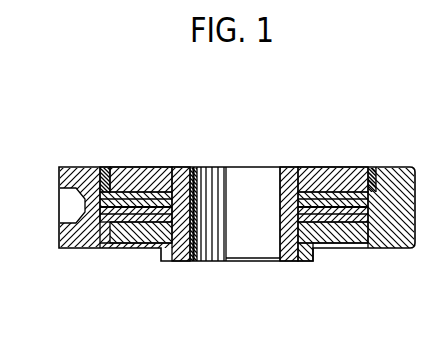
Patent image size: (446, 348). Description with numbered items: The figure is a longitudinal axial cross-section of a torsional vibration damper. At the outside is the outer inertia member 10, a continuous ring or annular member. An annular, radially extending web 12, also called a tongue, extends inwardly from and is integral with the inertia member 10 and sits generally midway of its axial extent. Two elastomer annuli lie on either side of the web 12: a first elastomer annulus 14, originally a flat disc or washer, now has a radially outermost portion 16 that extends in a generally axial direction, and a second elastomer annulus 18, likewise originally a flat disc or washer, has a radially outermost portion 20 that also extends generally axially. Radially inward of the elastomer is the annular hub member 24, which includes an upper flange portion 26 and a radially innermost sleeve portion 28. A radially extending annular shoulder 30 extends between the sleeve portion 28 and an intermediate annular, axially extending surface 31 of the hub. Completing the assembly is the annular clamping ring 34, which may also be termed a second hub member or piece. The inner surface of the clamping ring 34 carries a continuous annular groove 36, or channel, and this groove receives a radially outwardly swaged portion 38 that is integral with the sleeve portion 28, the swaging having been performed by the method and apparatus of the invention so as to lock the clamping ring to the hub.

The outer inertia member 10 is at (59, 178).
The web 12 is at (129, 167).
The first elastomer annulus 14 is at (172, 167).
The radially outermost portion 16 is at (104, 167).
The second elastomer annulus 18 is at (143, 246).
The radially outermost portion 20 is at (105, 247).
The hub member 24 is at (272, 168).
The upper flange portion 26 is at (334, 167).
The sleeve portion 28 is at (284, 250).
The annular shoulder 30 is at (296, 226).
The intermediate annular surface 31 is at (298, 197).
The clamping ring 34 is at (318, 250).
The annular groove 36 is at (316, 262).
The swaged portion 38 is at (170, 263).